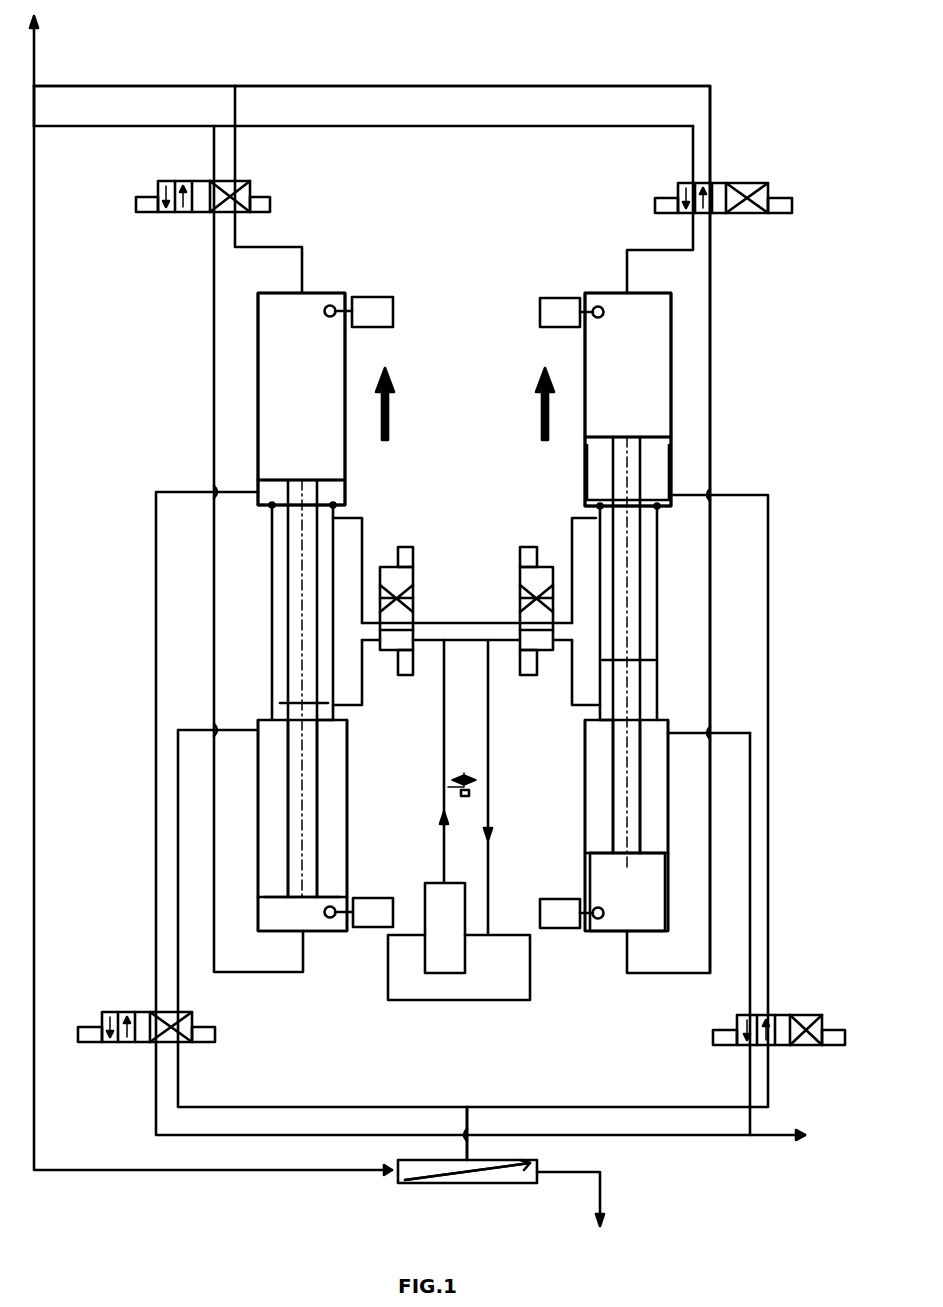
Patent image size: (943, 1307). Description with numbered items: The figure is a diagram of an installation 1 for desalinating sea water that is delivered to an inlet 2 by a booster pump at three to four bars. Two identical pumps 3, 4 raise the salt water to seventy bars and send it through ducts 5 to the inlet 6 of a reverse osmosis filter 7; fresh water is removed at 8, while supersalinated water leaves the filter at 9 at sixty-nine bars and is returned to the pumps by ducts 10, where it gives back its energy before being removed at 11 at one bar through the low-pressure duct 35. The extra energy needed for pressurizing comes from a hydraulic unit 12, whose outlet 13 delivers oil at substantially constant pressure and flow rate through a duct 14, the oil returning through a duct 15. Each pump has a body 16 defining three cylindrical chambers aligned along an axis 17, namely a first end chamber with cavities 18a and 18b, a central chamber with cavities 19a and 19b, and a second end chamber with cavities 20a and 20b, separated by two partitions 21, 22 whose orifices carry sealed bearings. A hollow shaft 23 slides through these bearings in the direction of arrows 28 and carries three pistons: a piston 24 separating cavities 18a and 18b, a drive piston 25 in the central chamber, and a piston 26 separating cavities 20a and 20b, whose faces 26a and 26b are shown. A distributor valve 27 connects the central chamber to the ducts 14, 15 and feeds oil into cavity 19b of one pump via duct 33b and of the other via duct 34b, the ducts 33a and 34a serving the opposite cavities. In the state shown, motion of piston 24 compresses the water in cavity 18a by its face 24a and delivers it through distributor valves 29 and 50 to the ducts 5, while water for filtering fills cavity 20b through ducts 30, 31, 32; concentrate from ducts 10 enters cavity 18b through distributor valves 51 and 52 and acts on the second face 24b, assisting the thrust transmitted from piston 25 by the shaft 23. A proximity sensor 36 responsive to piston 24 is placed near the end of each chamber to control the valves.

The installation 1 is at (760, 372).
The inlet 2 is at (42, 22).
The pump 3 is at (352, 458).
The pump 4 is at (578, 458).
The ducts 5 is at (68, 126).
The inlet 6 is at (394, 1174).
The reverse osmosis filter 7 is at (465, 1183).
The fresh water outlet 8 is at (606, 1220).
The supersalinated water outlet 9 is at (470, 1155).
The ducts 10 is at (335, 1107).
The removal outlet 11 is at (800, 1130).
The hydraulic unit 12 is at (455, 957).
The outlet 13 is at (444, 882).
The duct 14 is at (440, 730).
The duct 15 is at (484, 730).
The body 16 is at (350, 356).
The axis 17 is at (270, 832).
The cavity 18a is at (322, 394).
The cavity 18b is at (335, 496).
The cavity 19a is at (278, 626).
The cavity 19b is at (278, 710).
The cavity 20a is at (336, 806).
The cavity 20b is at (318, 912).
The partition 21 is at (276, 512).
The partition 22 is at (326, 722).
The hollow shaft 23 is at (324, 860).
The piston 24 is at (258, 492).
The face 24a is at (280, 476).
The second face 24b is at (600, 448).
The drive piston 25 is at (330, 706).
The piston 26 is at (270, 904).
The face 26a is at (650, 846).
The face 26b is at (652, 864).
The distributor valve 27 is at (516, 606).
The arrow 28 is at (392, 404).
The distributor valve 29 is at (258, 190).
The duct 30 is at (440, 86).
The duct 31 is at (214, 400).
The duct 32 is at (710, 400).
The duct 33a is at (362, 548).
The duct 33b is at (362, 680).
The duct 34a is at (572, 548).
The duct 34b is at (572, 690).
The duct 35 is at (154, 1110).
The proximity sensor 36 is at (330, 304).
The distributor valve 50 is at (668, 196).
The distributor valve 51 is at (116, 1004).
The distributor valve 52 is at (806, 1004).